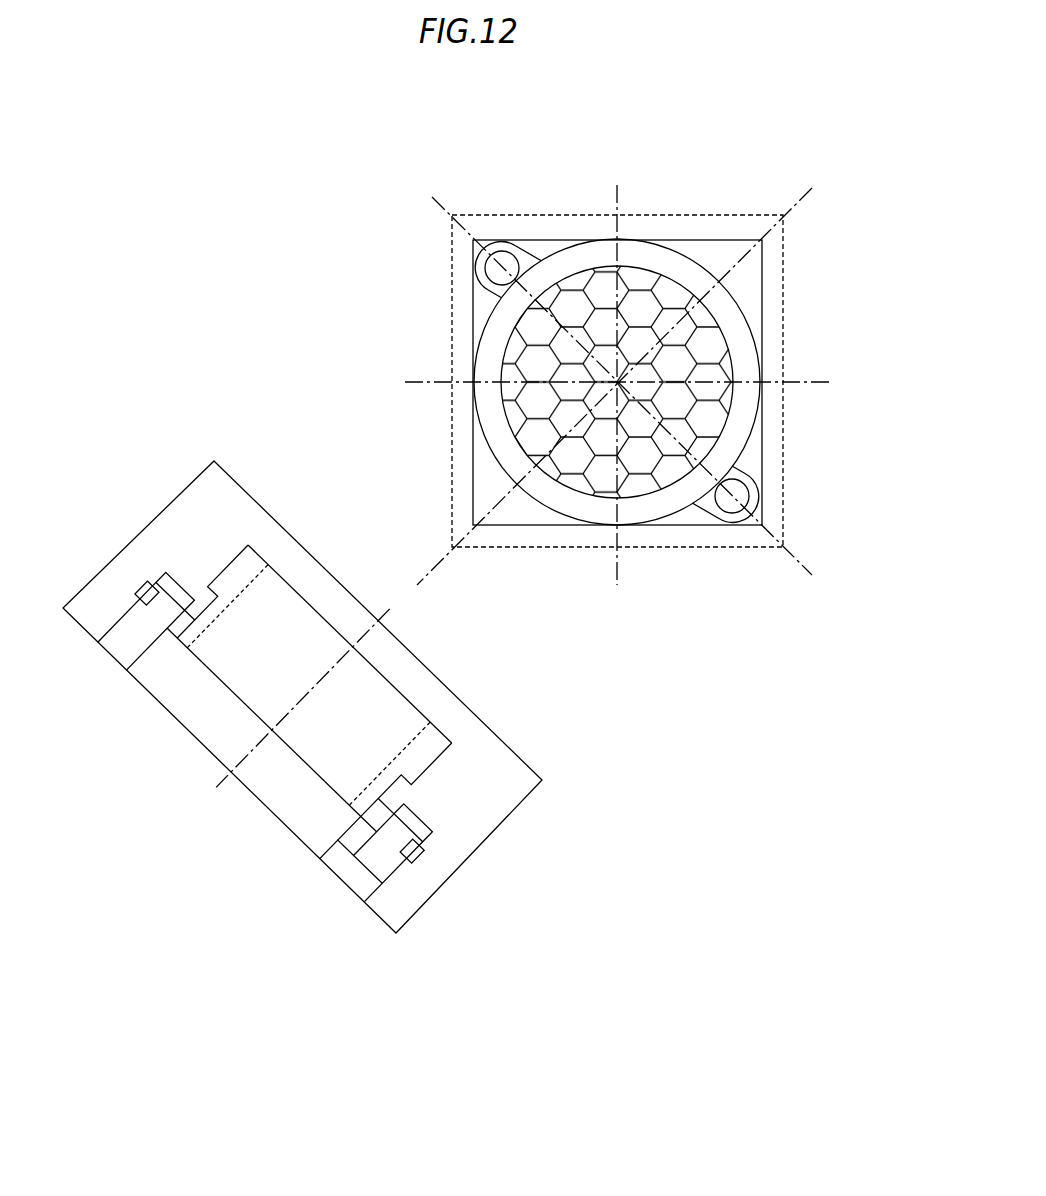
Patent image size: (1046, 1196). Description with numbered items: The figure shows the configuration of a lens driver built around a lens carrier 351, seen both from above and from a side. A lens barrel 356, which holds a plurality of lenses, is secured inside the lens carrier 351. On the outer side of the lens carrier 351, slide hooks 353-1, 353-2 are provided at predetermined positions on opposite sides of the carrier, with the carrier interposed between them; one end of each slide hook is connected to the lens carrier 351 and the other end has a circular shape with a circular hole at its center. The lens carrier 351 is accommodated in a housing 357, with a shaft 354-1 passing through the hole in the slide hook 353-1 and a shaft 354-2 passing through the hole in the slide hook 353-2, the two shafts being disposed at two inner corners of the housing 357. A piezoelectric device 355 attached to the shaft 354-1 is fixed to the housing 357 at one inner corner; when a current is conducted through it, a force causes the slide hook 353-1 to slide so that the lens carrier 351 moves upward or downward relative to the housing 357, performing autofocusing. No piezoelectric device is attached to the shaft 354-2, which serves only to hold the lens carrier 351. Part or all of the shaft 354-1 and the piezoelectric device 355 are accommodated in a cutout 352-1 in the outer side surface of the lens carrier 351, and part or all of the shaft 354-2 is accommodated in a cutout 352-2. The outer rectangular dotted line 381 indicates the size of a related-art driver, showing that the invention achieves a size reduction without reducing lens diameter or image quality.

The lens carrier 351 is at (550, 491).
The cutout 352-1 is at (716, 463).
The cutout 352-2 is at (568, 267).
The slide hook 353-1 is at (710, 498).
The slide hook 353-2 is at (487, 298).
The shaft 354-1 is at (722, 500).
The shaft 354-2 is at (505, 258).
The piezoelectric device 355 is at (345, 875).
The lens barrel 356 is at (575, 476).
The housing 357 is at (696, 236).
The outer rectangular dotted line 381 is at (785, 332).